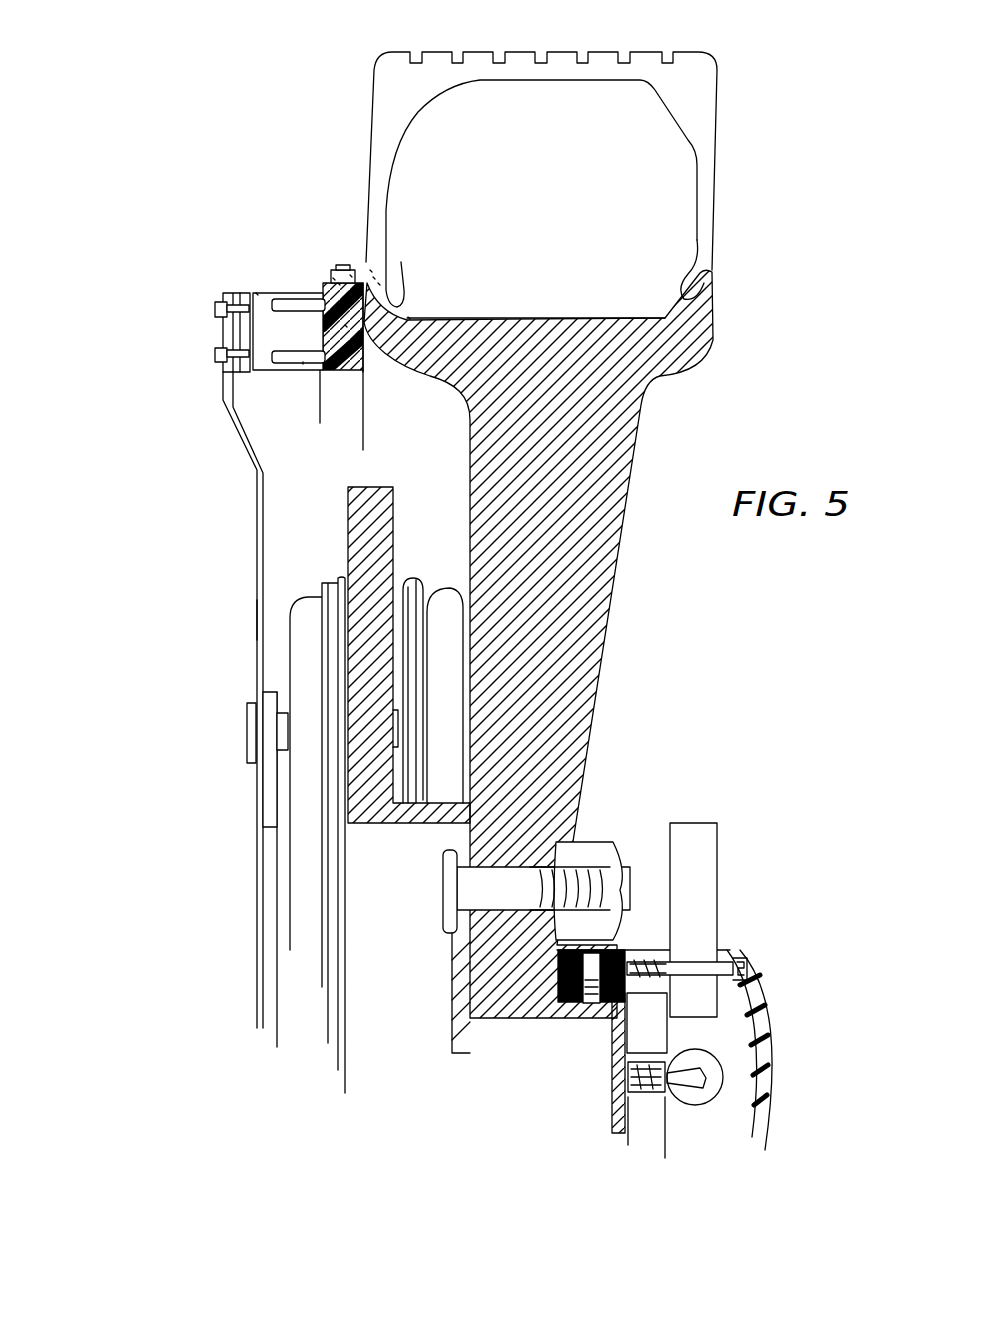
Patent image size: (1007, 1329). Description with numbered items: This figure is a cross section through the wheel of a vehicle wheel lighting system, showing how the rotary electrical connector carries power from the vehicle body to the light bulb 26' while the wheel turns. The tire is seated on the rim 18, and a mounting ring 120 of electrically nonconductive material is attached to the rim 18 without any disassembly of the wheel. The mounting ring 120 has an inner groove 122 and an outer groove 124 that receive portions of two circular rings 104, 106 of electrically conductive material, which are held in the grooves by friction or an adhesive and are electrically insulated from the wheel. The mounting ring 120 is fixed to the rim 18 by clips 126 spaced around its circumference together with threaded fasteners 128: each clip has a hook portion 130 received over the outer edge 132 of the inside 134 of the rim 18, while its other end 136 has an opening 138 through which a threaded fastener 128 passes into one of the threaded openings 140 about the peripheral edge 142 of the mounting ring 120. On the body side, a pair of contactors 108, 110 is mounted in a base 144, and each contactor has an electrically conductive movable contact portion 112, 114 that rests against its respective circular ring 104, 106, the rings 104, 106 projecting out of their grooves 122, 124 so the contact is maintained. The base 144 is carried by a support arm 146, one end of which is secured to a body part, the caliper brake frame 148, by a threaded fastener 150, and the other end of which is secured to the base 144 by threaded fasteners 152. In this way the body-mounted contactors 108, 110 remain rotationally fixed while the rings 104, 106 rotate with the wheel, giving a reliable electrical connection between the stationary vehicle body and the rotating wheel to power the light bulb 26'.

The rim 18 is at (705, 338).
The light bulb 26' is at (772, 1028).
The circular ring 104 is at (322, 290).
The circular ring 106 is at (320, 370).
The contactor 108 is at (258, 293).
The contactor 110 is at (285, 362).
The movable contact portion 112 is at (318, 294).
The movable contact portion 114 is at (303, 362).
The mounting ring 120 is at (364, 373).
The inner groove 122 is at (368, 388).
The outer groove 124 is at (345, 325).
The clip 126 is at (353, 272).
The threaded fastener 128 is at (347, 278).
The hook portion 130 is at (373, 277).
The outer edge 132 is at (378, 283).
The inside of the rim 134 is at (408, 318).
The other end of the clip 136 is at (338, 283).
The opening 138 is at (370, 270).
The threaded opening 140 is at (350, 275).
The peripheral edge 142 is at (333, 278).
The base 144 is at (263, 373).
The support arm 146 is at (255, 612).
The caliper brake frame 148 is at (270, 896).
The threaded fastener 150 is at (246, 742).
The threaded fasteners 152 is at (215, 355).